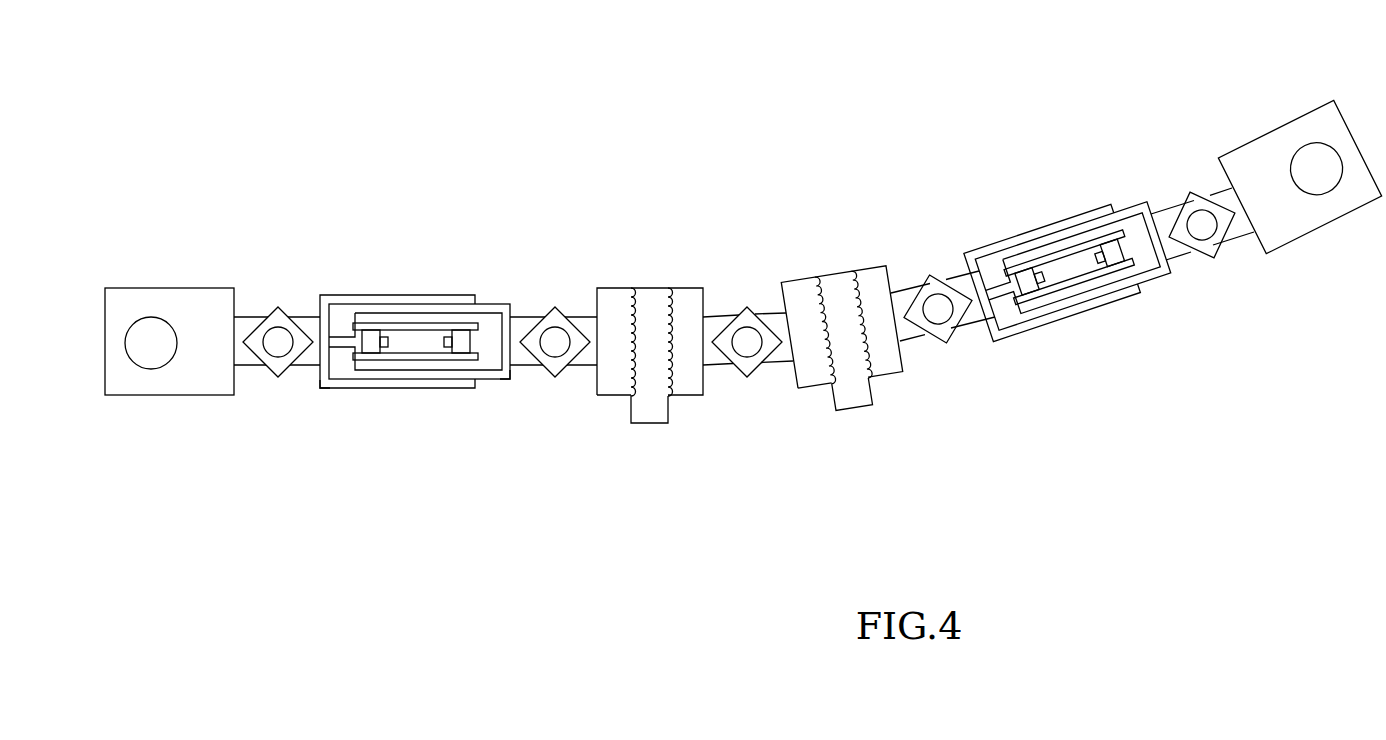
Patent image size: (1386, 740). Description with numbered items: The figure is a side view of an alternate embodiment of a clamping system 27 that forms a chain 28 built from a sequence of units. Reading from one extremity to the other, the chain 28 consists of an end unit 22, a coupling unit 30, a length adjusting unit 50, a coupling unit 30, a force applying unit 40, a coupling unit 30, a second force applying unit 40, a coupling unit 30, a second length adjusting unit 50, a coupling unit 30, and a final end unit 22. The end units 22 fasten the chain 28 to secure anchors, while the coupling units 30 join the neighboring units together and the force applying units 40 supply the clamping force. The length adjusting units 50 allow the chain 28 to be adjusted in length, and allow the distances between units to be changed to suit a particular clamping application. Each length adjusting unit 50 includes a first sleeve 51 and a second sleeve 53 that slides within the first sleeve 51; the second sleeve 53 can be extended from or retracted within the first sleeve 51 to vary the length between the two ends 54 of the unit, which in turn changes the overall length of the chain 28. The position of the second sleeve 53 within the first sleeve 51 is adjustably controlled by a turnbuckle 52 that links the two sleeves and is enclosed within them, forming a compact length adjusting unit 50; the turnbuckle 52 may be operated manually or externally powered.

The end unit 22 is at (172, 288).
The clamping system 27 is at (653, 187).
The chain 28 is at (948, 230).
The coupling unit 30 is at (288, 298).
The force applying unit 40 is at (815, 397).
The length adjusting unit 50 is at (741, 408).
The first sleeve 51 is at (370, 295).
The turnbuckle 52 is at (418, 323).
The second sleeve 53 is at (498, 304).
The end 54 is at (320, 397).